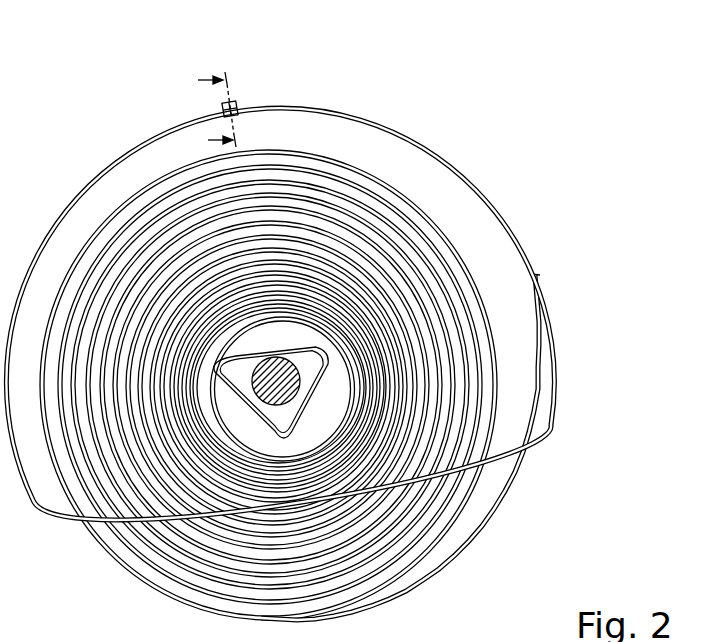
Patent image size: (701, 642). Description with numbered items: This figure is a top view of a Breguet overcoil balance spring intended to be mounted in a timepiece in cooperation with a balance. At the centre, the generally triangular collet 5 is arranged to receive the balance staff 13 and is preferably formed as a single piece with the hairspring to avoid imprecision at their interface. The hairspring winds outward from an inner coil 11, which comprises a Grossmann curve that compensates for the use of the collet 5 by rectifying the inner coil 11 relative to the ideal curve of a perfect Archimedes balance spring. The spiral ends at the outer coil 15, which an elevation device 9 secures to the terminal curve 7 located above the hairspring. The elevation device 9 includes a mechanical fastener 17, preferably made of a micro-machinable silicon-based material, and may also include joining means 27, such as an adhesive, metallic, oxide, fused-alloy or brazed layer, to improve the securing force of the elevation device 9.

The collet 5 is at (297, 407).
The terminal curve 7 is at (85, 180).
The elevation device 9 is at (229, 60).
The inner coil 11 is at (292, 324).
The balance staff 13 is at (285, 382).
The outer coil 15 is at (395, 129).
The mechanical fastener 17 is at (239, 103).
The joining means 27 is at (400, 458).